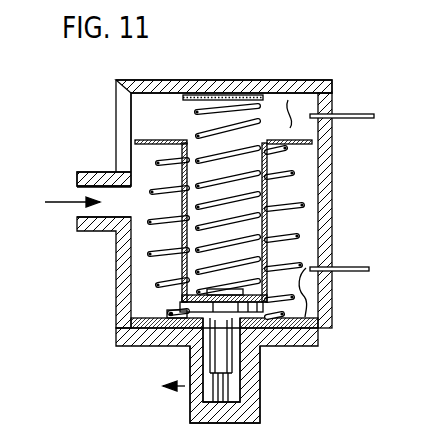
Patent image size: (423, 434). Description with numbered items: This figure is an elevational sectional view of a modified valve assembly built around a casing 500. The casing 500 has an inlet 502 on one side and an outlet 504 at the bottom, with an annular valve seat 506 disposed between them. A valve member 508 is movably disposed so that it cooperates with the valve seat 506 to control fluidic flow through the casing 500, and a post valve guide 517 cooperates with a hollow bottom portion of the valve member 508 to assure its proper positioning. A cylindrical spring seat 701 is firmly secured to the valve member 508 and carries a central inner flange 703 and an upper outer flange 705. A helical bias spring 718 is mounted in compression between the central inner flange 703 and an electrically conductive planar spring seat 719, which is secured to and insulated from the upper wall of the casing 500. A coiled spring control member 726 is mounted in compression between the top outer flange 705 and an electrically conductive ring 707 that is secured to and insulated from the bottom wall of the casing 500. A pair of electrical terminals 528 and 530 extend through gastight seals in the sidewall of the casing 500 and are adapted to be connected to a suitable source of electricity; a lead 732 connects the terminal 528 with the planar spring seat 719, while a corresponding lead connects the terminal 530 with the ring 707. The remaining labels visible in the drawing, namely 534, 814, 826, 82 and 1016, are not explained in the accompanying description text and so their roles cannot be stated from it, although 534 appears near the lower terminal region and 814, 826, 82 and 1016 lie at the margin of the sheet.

The casing 500 is at (334, 166).
The inlet 502 is at (78, 190).
The outlet 504 is at (203, 396).
The annular valve seat 506 is at (180, 334).
The valve member 508 is at (266, 312).
The post valve guide 517 is at (238, 387).
The electrical terminal 528 is at (345, 119).
The electrical terminal 530 is at (358, 264).
The seal 534 is at (322, 299).
The cylindrical spring seat 701 is at (272, 230).
The central inner flange 703 is at (207, 222).
The upper outer flange 705 is at (156, 140).
The electrically conductive ring 707 is at (118, 333).
The helical bias spring 718 is at (256, 128).
The electrically conductive planar spring seat 719 is at (177, 80).
The coiled spring control member 726 is at (156, 285).
The lead 732 is at (282, 133).
The lead 814 is at (422, 110).
The lead 826 is at (422, 192).
The lead 82 is at (413, 239).
The controller 1016 is at (422, 427).